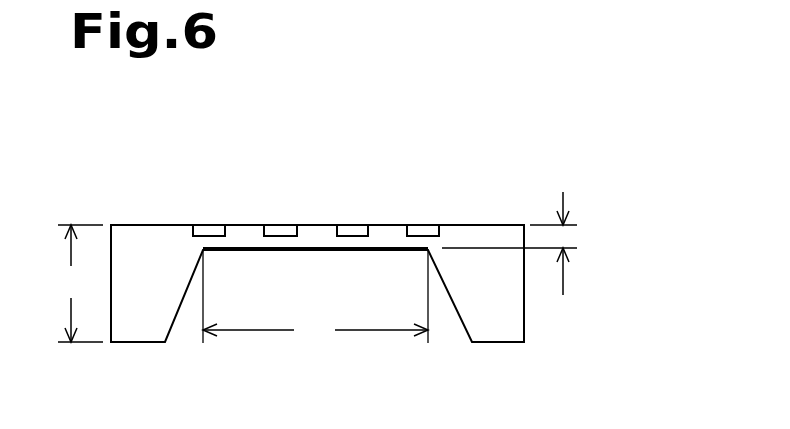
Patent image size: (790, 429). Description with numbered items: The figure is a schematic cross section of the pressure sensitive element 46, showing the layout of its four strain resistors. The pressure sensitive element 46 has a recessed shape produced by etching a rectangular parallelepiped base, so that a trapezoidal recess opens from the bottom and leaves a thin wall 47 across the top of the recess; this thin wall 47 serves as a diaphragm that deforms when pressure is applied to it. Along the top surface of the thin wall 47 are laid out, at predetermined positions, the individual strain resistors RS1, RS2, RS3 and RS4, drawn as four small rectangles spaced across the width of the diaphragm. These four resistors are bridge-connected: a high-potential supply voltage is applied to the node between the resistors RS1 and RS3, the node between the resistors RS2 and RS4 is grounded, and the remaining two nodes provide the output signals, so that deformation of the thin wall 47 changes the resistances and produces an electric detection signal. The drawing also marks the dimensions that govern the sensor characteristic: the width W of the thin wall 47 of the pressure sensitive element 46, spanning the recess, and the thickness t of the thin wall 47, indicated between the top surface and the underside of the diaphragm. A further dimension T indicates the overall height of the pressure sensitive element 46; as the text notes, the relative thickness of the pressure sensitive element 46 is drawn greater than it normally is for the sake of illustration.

The pressure sensitive element 46 is at (524, 332).
The thin wall 47 is at (325, 245).
The strain resistor RS1 is at (210, 226).
The strain resistor RS2 is at (279, 226).
The strain resistor RS3 is at (350, 226).
The strain resistor RS4 is at (425, 226).
The total thickness of substrate T is at (80, 283).
The width of the thin wall W is at (315, 328).
The thickness of the thin wall t is at (517, 243).